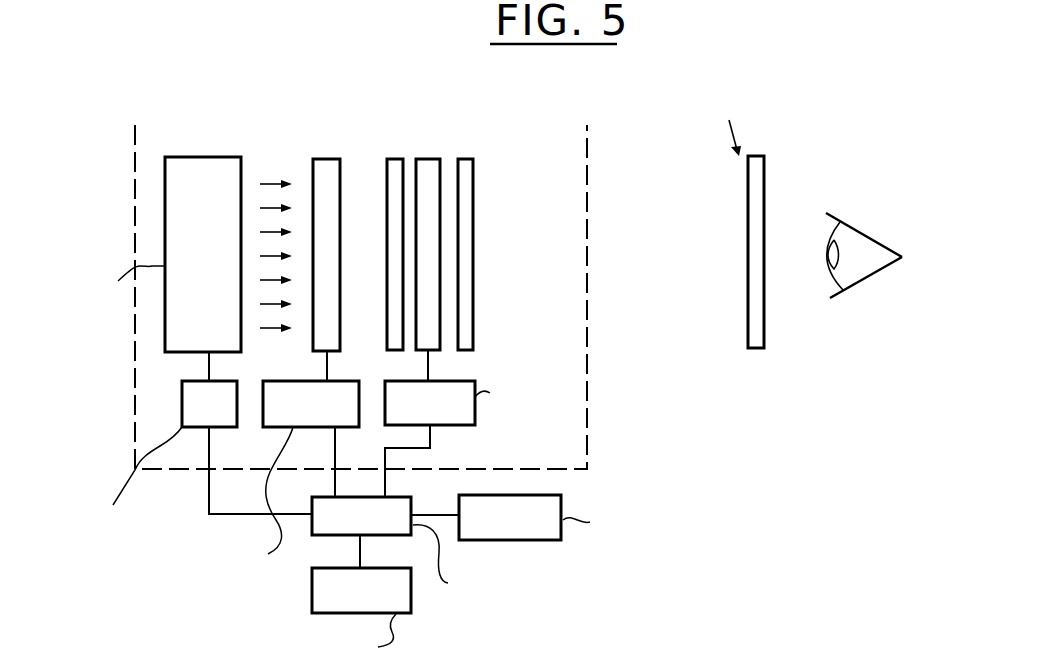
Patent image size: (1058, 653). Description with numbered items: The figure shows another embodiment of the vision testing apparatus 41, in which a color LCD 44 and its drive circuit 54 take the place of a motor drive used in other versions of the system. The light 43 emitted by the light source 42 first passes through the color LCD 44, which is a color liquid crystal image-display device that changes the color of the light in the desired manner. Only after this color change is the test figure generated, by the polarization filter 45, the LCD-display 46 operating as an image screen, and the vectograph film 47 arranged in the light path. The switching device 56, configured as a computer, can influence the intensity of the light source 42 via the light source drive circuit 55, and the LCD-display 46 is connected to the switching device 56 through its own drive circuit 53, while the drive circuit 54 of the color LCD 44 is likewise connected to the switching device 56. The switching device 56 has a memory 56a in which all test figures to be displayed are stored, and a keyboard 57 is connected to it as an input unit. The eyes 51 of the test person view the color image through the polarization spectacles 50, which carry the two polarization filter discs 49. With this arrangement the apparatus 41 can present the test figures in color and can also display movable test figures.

The vision testing apparatus 41 is at (135, 168).
The light source 42 is at (200, 168).
The light 43 is at (272, 181).
The color LCD 44 is at (327, 170).
The polarization filter 45 is at (395, 165).
The LCD-display 46 is at (428, 168).
The vectograph film 47 is at (465, 165).
The polarization filter discs 49 is at (757, 152).
The polarization spectacles 50 is at (731, 124).
The eyes 51 is at (856, 230).
The drive circuit 53 is at (414, 411).
The drive circuit 54 is at (295, 411).
The light source drive circuit 55 is at (193, 411).
The switching device 56 is at (344, 527).
The memory 56a is at (487, 528).
The keyboard 57 is at (344, 600).